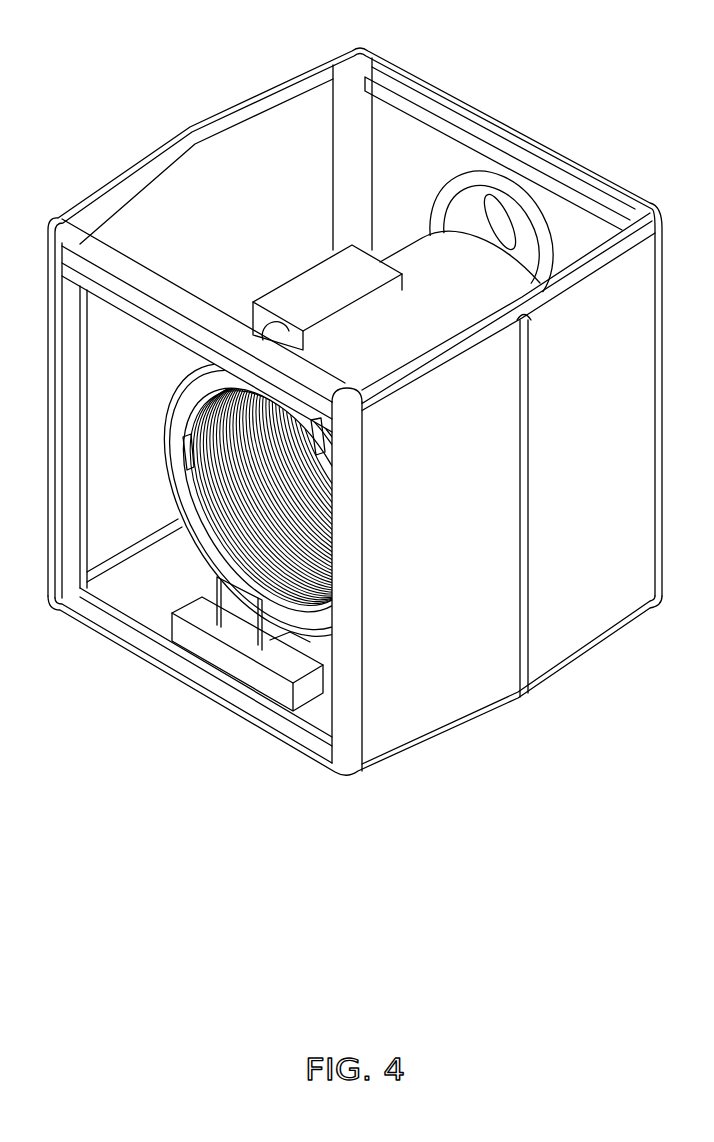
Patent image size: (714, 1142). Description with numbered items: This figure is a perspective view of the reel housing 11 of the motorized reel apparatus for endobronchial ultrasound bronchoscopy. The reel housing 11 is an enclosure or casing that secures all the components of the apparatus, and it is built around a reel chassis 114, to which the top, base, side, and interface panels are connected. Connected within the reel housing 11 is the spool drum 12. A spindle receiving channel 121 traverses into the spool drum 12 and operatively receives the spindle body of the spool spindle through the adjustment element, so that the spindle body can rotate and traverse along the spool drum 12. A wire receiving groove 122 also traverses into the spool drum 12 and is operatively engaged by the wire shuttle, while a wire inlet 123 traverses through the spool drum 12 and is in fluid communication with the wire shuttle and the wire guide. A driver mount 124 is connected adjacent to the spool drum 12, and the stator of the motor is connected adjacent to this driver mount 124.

The reel housing 11 is at (117, 46).
The reel chassis 114 is at (263, 90).
The spool drum 12 is at (410, 240).
The spindle receiving channel 121 is at (310, 423).
The wire receiving groove 122 is at (197, 382).
The wire inlet 123 is at (184, 452).
The driver mount 124 is at (287, 283).